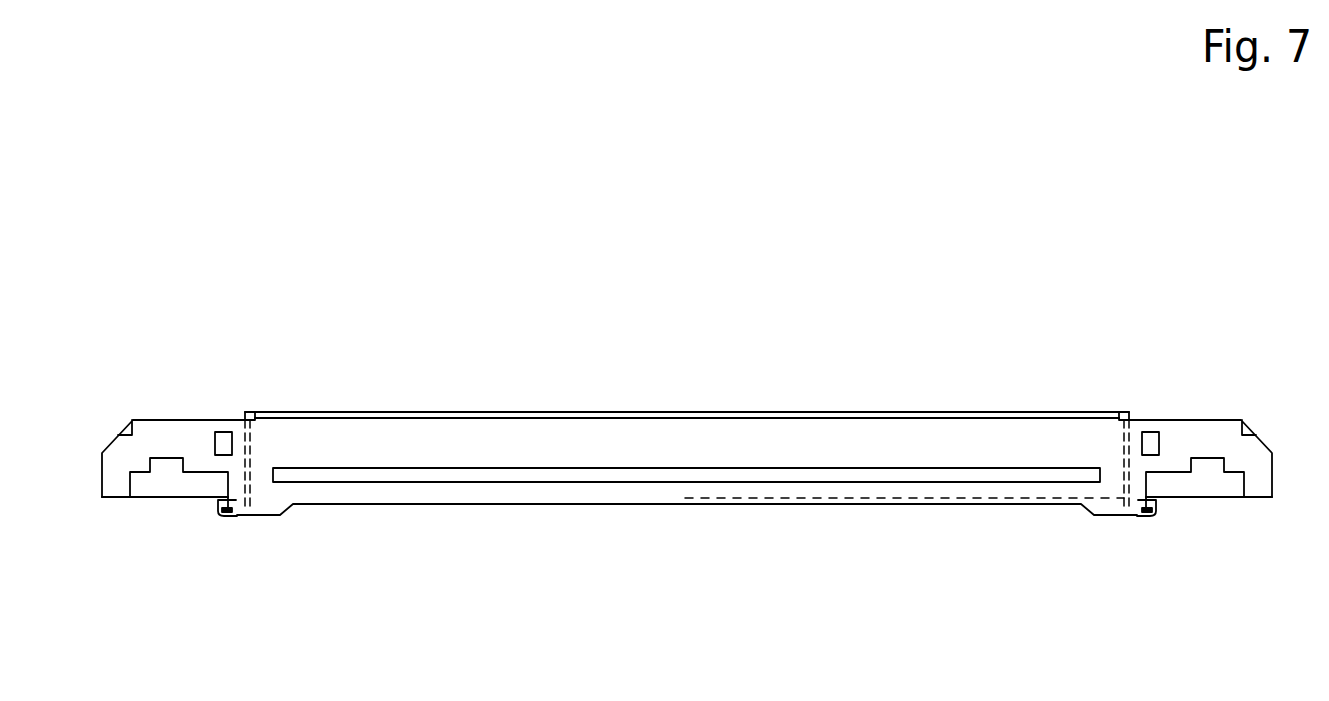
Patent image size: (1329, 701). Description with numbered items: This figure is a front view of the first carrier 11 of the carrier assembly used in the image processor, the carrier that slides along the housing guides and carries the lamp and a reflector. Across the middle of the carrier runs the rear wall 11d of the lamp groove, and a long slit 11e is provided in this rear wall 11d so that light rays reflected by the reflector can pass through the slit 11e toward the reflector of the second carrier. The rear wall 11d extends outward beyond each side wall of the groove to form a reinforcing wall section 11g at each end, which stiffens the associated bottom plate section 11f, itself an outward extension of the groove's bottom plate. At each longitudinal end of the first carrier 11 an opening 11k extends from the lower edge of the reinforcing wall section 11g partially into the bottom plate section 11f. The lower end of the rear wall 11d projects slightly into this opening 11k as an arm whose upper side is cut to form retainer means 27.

The first carrier 11 is at (505, 397).
The rear wall 11d is at (702, 430).
The slit 11e is at (550, 475).
The reinforcing wall section 11g is at (167, 432).
The opening 11k is at (170, 480).
The bottom plate section 11f is at (143, 497).
The retainer means 27 is at (218, 501).